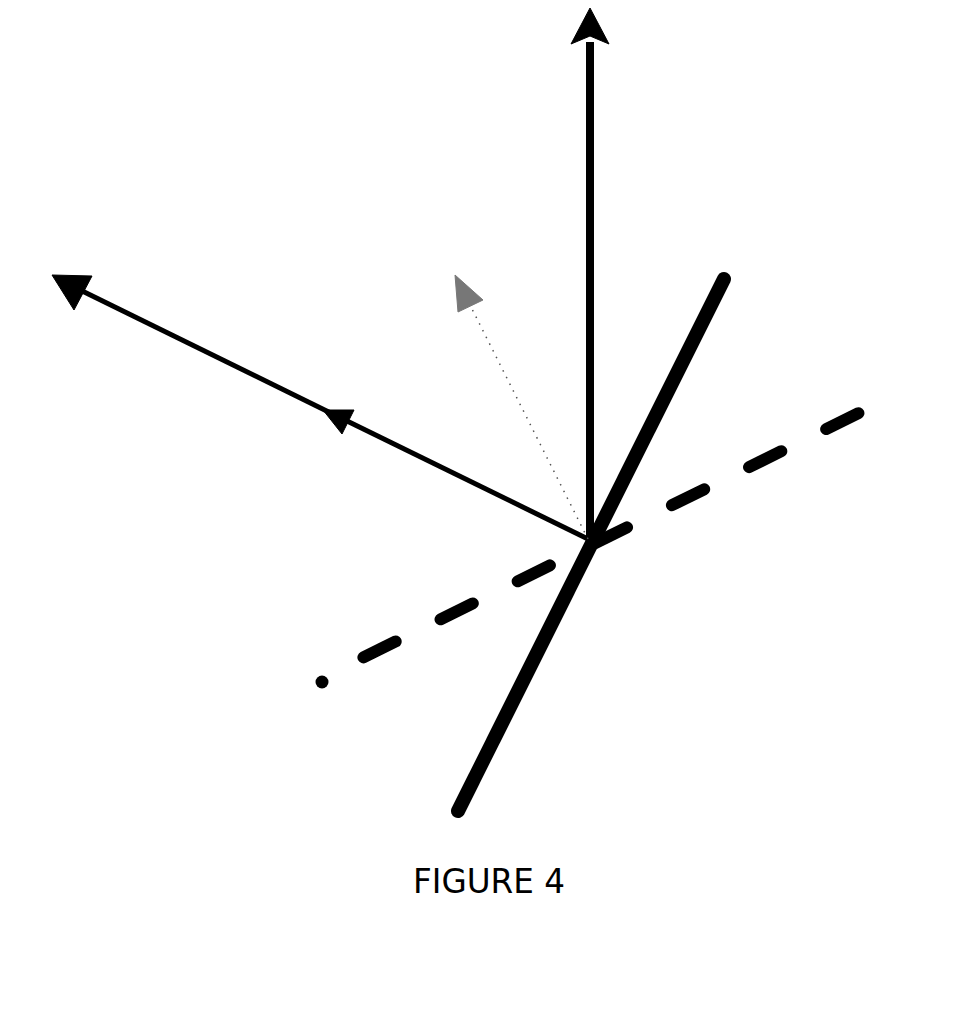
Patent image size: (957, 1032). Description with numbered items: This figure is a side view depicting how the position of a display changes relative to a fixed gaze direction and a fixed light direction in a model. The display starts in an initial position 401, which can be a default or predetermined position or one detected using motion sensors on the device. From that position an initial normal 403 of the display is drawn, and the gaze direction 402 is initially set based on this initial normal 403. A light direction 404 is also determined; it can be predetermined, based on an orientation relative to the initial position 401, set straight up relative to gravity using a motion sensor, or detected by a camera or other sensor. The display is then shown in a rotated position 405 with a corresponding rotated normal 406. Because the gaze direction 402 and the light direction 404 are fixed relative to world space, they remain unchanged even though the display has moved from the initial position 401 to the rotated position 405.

The initial position of the display 401 is at (537, 672).
The gaze direction 402 is at (100, 300).
The initial normal 403 is at (423, 463).
The light direction 404 is at (596, 190).
The rotated position of the display 405 is at (770, 470).
The rotated normal 406 is at (487, 330).